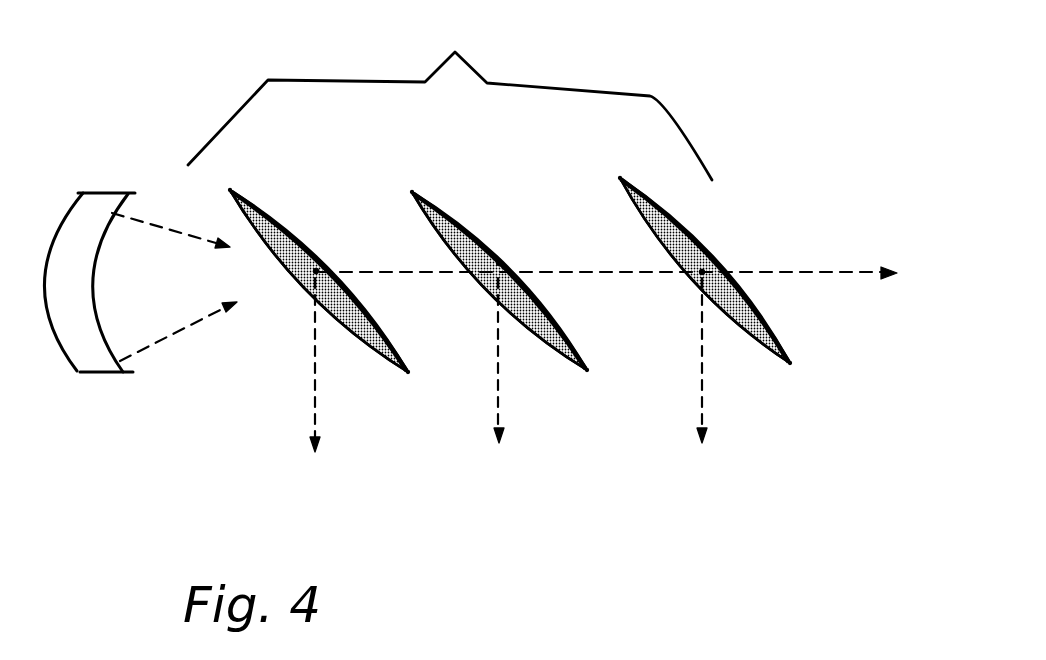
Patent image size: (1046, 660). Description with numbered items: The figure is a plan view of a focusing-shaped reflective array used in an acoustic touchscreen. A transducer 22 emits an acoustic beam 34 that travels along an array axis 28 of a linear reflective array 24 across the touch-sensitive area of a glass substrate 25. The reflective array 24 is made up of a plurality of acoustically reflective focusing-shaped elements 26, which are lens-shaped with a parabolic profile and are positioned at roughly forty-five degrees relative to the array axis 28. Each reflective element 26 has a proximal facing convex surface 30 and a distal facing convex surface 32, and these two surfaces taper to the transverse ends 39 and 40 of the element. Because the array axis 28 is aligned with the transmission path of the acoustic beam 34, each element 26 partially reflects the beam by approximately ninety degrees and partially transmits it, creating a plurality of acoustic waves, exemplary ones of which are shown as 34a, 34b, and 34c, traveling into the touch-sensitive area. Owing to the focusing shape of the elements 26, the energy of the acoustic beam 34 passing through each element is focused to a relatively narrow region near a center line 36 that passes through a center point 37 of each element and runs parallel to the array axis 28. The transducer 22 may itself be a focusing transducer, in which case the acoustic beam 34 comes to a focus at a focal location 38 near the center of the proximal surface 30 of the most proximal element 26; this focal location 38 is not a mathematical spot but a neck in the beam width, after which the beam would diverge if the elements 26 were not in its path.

The transducer 22 is at (77, 218).
The linear reflective array 24 is at (450, 90).
The acoustic touchscreen substrate 25 is at (905, 402).
The acoustically reflective focusing-shaped element 26 is at (285, 218).
The array axis 28 is at (633, 288).
The proximal facing convex surface 30 is at (345, 325).
The distal facing convex surface 32 is at (307, 252).
The acoustic beam 34 is at (196, 322).
The acoustic wave 34a is at (315, 390).
The acoustic wave 34b is at (498, 390).
The acoustic wave 34c is at (702, 388).
The center line 36 is at (807, 272).
The center point 37 is at (316, 270).
The focal location 38 is at (284, 270).
The transverse end 39 is at (230, 189).
The transverse end 40 is at (409, 374).